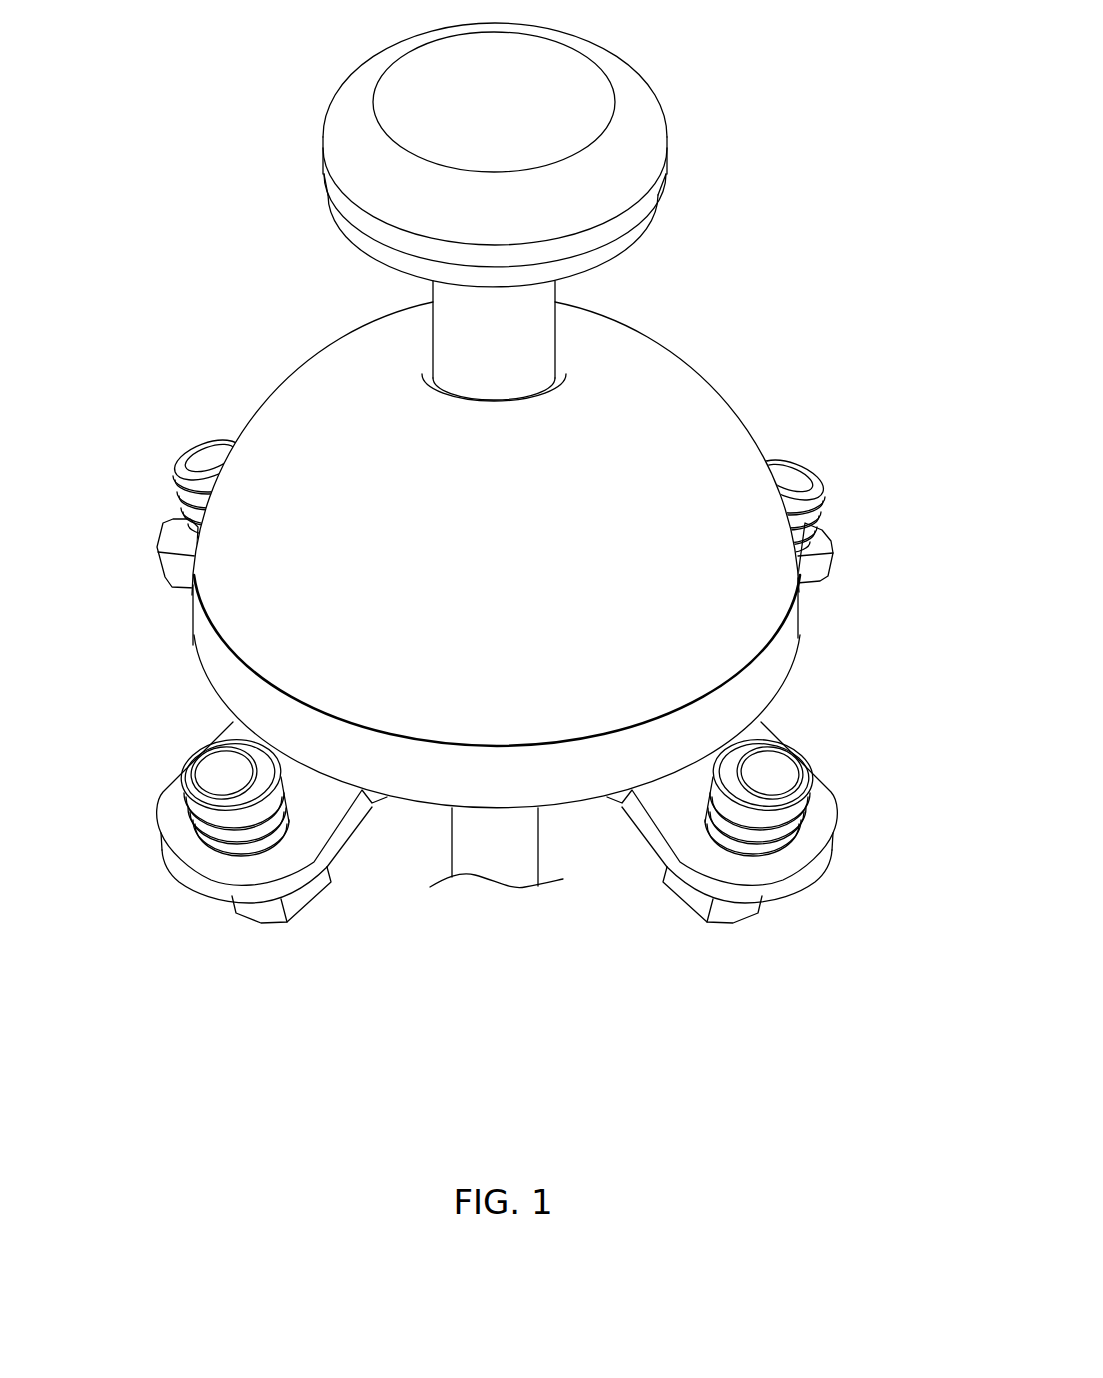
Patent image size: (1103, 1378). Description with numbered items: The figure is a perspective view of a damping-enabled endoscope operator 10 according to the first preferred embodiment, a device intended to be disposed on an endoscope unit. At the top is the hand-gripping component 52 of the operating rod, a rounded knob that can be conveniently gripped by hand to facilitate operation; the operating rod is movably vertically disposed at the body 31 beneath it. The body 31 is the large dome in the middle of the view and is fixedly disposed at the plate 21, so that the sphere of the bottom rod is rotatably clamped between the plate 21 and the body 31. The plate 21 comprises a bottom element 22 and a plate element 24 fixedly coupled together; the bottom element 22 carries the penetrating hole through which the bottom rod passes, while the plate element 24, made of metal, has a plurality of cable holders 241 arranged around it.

The damping-enabled endoscope operator 10 is at (830, 137).
The hand-gripping component 52 is at (636, 72).
The body 31 is at (722, 397).
The plate 21 is at (814, 619).
The bottom element 22 is at (780, 687).
The plate element 24 is at (640, 830).
The cable holders 241 is at (177, 765).